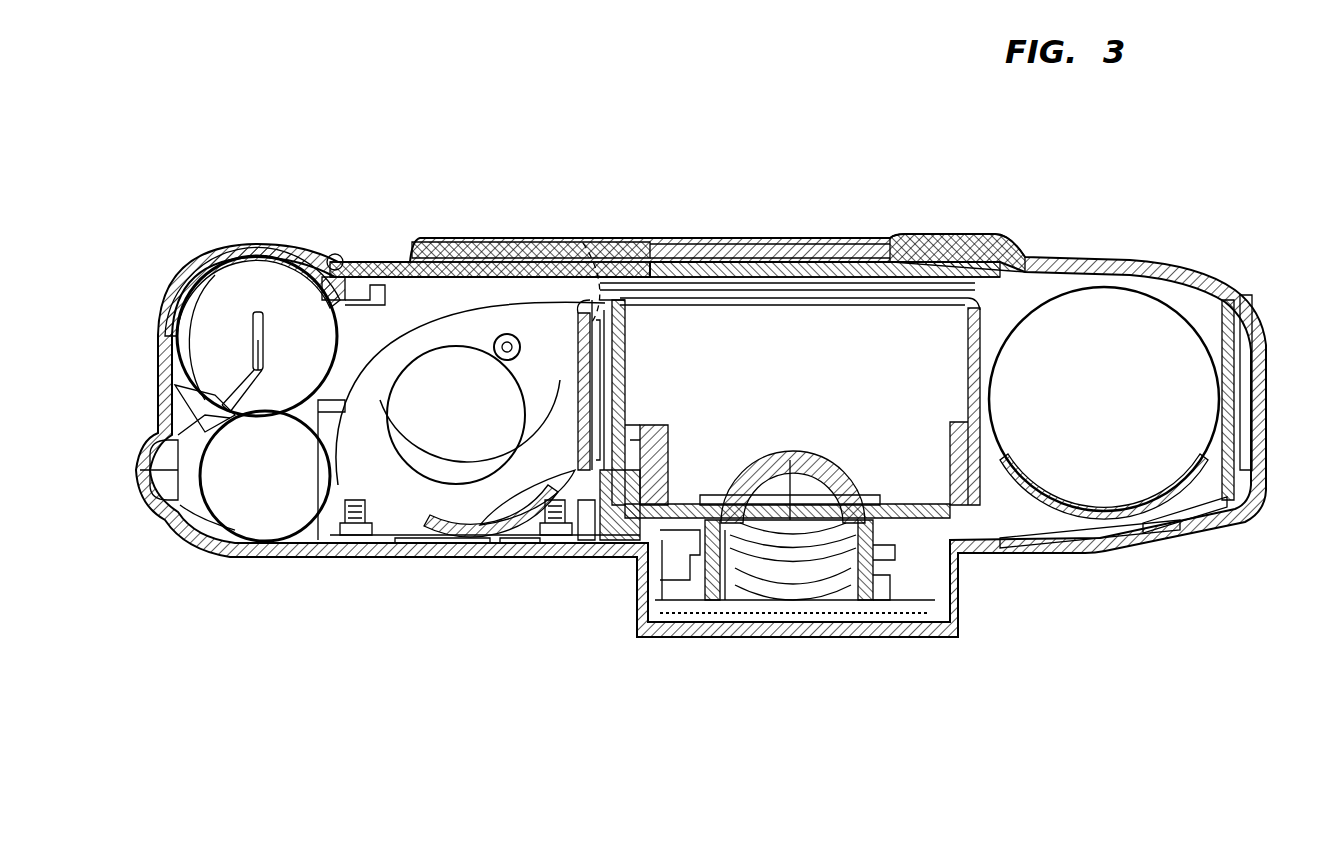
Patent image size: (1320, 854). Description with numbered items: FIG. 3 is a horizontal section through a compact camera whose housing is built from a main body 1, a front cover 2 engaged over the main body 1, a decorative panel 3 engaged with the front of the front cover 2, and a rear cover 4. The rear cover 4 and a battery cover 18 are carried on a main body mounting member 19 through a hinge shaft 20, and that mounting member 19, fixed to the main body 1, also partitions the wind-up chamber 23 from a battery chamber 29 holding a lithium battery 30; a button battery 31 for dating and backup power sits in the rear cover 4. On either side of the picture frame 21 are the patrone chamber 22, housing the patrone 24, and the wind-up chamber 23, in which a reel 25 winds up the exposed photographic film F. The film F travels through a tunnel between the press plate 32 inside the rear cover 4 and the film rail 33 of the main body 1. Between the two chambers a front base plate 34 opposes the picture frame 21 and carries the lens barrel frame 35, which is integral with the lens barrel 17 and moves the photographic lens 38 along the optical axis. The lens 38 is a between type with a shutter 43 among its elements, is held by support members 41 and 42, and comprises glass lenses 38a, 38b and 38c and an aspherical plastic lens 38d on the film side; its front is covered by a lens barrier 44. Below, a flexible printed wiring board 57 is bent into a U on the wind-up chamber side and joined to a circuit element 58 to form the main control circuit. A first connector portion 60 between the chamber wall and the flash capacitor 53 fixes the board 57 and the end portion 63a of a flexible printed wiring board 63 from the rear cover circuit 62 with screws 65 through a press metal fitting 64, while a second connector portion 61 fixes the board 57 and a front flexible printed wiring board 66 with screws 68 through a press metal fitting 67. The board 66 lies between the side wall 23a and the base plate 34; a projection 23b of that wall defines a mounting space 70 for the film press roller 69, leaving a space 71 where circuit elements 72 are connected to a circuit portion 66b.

The main body 1 is at (150, 470).
The front cover 2 is at (232, 550).
The decorative panel 3 is at (1010, 540).
The rear cover 4 is at (562, 247).
The lens barrel 17 is at (640, 600).
The battery cover 18 is at (222, 255).
The main body mounting member 19 is at (328, 255).
The hinge shaft 20 is at (332, 255).
The picture frame 21 is at (882, 246).
The patrone chamber 22 is at (1260, 332).
The wind-up chamber 23 is at (491, 511).
The side wall 23a is at (553, 325).
The projection 23b is at (500, 530).
The patrone 24 is at (1188, 292).
The reel 25 is at (433, 367).
The battery chamber 29 is at (205, 392).
The lithium battery 30 is at (267, 253).
The button battery 31 is at (437, 235).
The press plate 32 is at (828, 292).
The film rail 33 is at (822, 280).
The front base plate 34 is at (614, 425).
The lens barrel frame 35 is at (627, 400).
The photographic lens 38 is at (850, 582).
The lens 38a is at (757, 600).
The lens 38b is at (792, 552).
The lens 38c is at (780, 585).
The lens 38d is at (803, 572).
The support member 41 is at (870, 575).
The support member 42 is at (880, 545).
The shutter 43 is at (812, 512).
The lens barrier 44 is at (722, 612).
The flash capacitor 53 is at (215, 512).
The flexible printed wiring board 57 is at (430, 547).
The circuit element 58 is at (1180, 522).
The first connector portion 60 is at (325, 502).
The second connector portion 61 is at (540, 540).
The rear cover circuit 62 is at (765, 250).
The flexible printed wiring board 63 is at (370, 263).
The end portion 63a is at (308, 492).
The press metal fitting 64 is at (345, 535).
The screws 65 is at (362, 535).
The front flexible printed wiring board 66 is at (602, 540).
The circuit portion 66b is at (668, 432).
The press metal fitting 67 is at (550, 538).
The screws 68 is at (585, 545).
The film press roller 69 is at (501, 336).
The mounting space 70 is at (591, 252).
The space 71 is at (585, 322).
The circuit elements 72 is at (574, 300).
The photographic film F is at (470, 300).